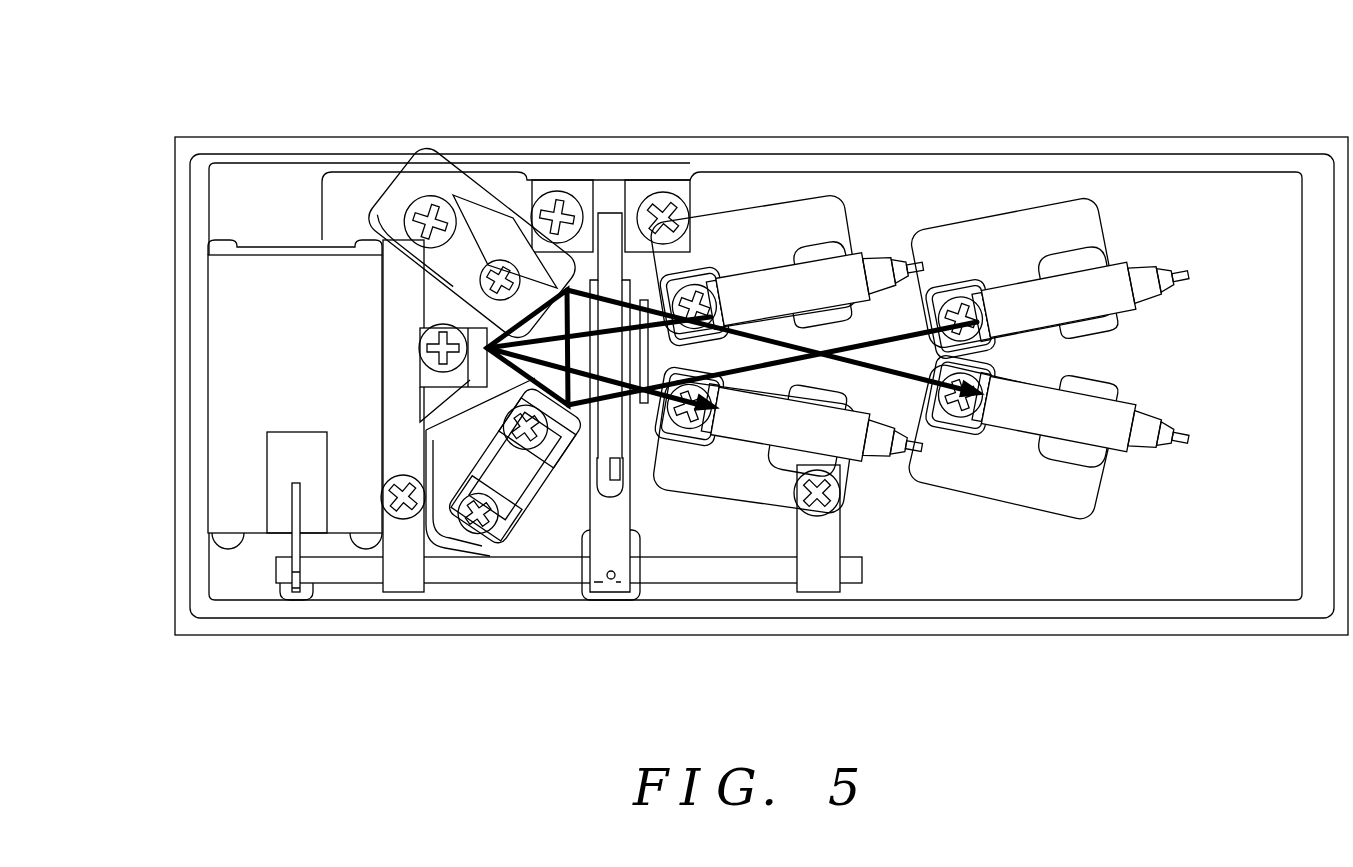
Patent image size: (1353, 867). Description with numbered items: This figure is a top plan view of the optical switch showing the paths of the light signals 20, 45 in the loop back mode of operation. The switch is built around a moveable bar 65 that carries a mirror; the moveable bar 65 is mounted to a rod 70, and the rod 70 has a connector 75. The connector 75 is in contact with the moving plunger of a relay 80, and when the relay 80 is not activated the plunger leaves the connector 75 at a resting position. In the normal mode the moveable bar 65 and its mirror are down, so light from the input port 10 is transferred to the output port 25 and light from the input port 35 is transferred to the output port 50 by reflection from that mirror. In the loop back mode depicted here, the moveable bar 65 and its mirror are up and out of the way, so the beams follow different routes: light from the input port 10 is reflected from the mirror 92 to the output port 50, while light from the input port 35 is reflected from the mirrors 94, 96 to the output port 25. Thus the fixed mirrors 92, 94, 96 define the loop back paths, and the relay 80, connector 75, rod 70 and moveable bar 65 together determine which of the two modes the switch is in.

The input port 10 is at (872, 252).
The light signal 20 is at (935, 428).
The output port 25 is at (1128, 425).
The input port 35 is at (1137, 280).
The light signal 45 is at (900, 328).
The output port 50 is at (870, 457).
The moveable bar 65 is at (627, 550).
The rod 70 is at (772, 572).
The connector 75 is at (307, 551).
The relay 80 is at (242, 385).
The mirror 92 is at (405, 280).
The mirror 94 is at (598, 385).
The mirror 96 is at (580, 290).